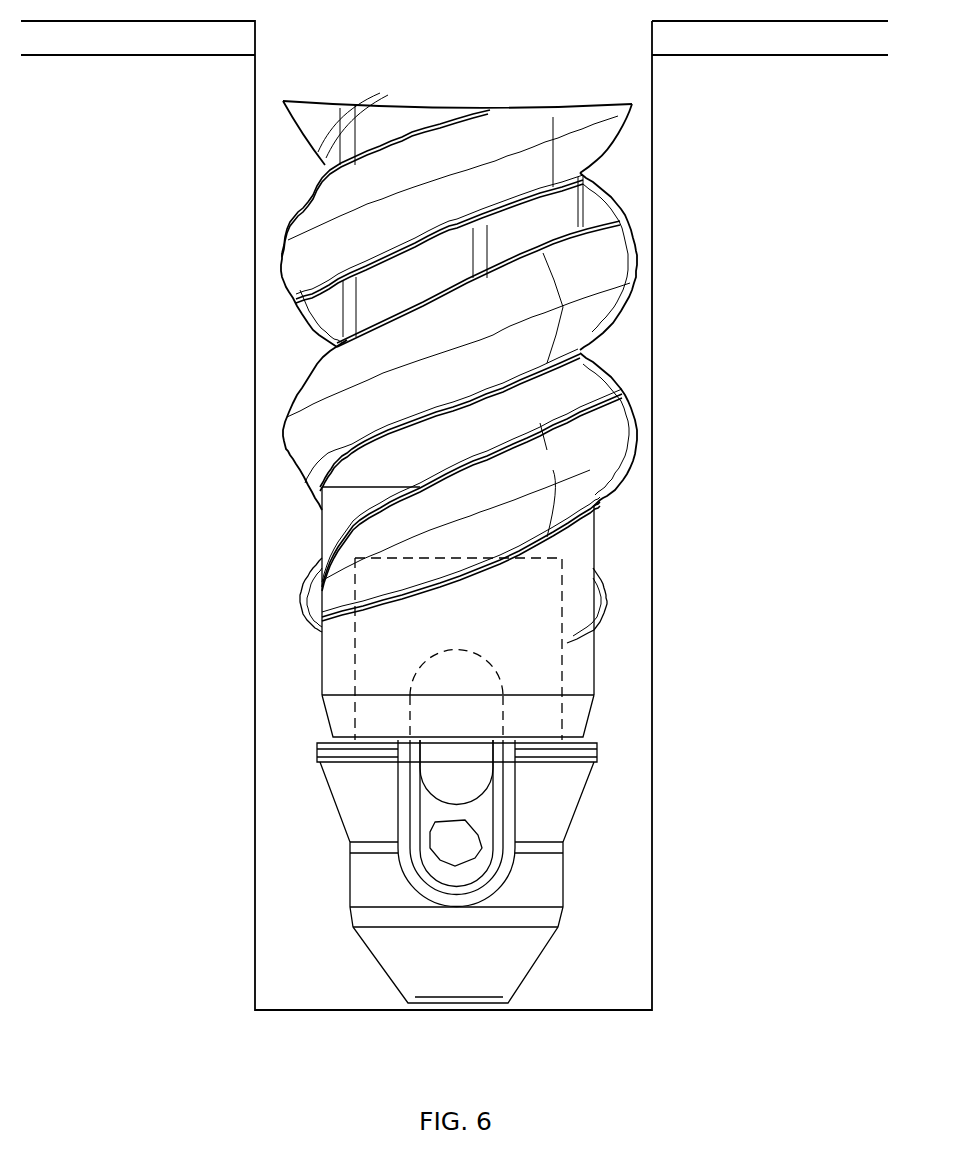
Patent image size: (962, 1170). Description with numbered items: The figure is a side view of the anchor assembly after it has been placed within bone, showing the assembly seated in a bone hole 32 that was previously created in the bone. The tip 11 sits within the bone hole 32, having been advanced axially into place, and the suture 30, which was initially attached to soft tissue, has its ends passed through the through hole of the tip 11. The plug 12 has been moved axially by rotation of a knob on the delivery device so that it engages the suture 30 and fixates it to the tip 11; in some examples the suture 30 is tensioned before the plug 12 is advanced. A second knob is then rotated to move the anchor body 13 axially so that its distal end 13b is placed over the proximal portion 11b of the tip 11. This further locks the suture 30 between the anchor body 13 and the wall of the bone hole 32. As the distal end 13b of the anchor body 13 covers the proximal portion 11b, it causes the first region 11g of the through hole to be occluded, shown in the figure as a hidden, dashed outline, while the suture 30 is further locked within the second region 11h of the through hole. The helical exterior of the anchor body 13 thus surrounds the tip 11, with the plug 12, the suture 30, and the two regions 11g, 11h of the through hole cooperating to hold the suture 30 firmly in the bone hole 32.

The tip 11 is at (580, 850).
The proximal portion 11b is at (527, 658).
The first region 11g is at (437, 682).
The second region 11h is at (418, 833).
The plug 12 is at (490, 792).
The anchor body 13 is at (635, 392).
The distal end 13b is at (343, 718).
The suture 30 is at (470, 852).
The bone hole 32 is at (193, 387).